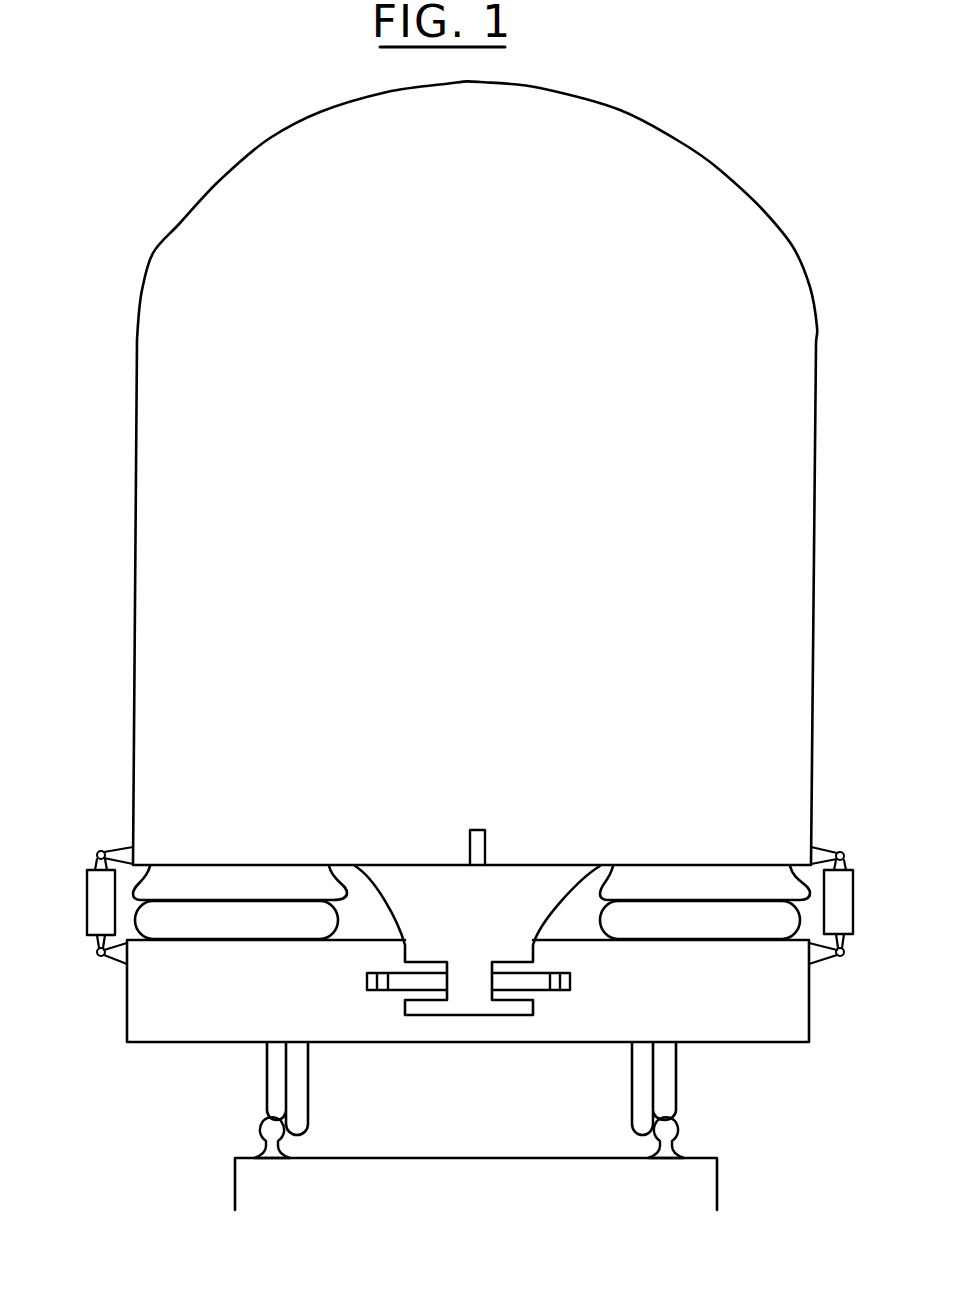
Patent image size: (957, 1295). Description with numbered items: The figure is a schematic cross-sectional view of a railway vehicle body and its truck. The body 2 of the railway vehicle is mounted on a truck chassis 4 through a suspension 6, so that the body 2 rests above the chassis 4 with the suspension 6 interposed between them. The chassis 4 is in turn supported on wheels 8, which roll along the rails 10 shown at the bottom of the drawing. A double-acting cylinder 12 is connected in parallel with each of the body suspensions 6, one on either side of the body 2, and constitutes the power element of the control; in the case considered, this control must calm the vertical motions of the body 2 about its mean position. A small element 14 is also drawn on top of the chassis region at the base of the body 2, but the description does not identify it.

The body 2 is at (800, 520).
The truck chassis 4 is at (778, 1003).
The suspension 6 is at (213, 928).
The wheels 8 is at (278, 1065).
The rails 10 is at (262, 1127).
The double-acting cylinder 12 is at (96, 901).
The feedthrough pin 14 is at (482, 828).